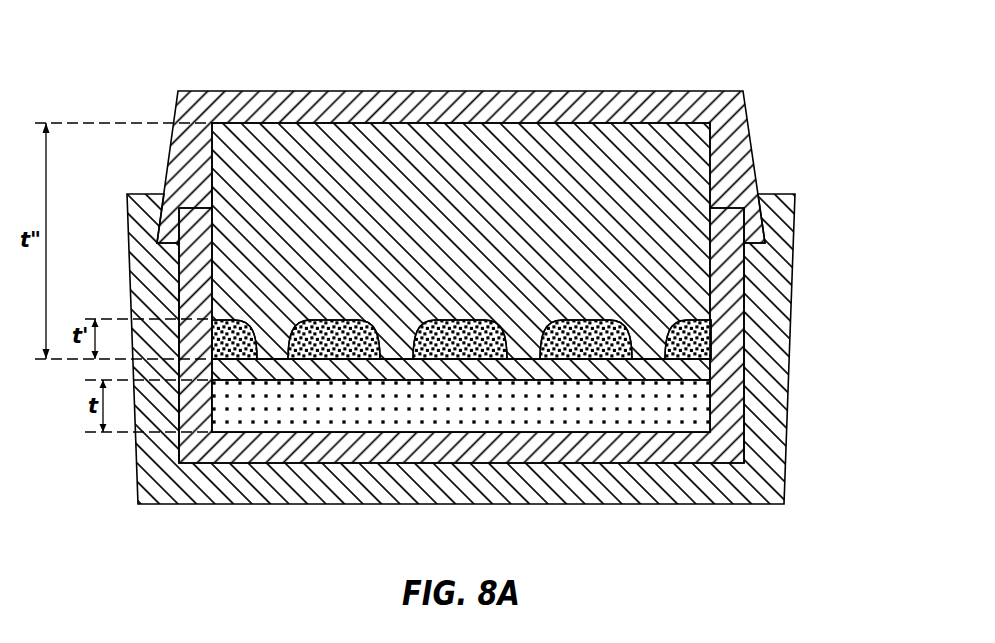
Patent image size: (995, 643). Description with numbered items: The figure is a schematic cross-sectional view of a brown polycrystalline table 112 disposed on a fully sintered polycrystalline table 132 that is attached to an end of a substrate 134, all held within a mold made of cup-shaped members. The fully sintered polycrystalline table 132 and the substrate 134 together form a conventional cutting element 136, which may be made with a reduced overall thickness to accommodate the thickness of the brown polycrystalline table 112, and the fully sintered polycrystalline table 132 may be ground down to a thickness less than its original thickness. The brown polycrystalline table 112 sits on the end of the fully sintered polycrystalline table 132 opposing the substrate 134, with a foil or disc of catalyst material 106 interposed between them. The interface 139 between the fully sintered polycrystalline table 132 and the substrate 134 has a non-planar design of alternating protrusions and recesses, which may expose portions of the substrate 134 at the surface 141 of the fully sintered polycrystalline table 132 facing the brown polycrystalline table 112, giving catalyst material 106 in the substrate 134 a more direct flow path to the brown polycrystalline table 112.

The catalyst material 106 is at (686, 270).
The brown polycrystalline table 112 is at (690, 413).
The fully sintered polycrystalline table 132 is at (698, 340).
The substrate 134 is at (430, 152).
The cutting element 136 is at (627, 220).
The interface 139 is at (464, 310).
The surface 141 is at (585, 368).